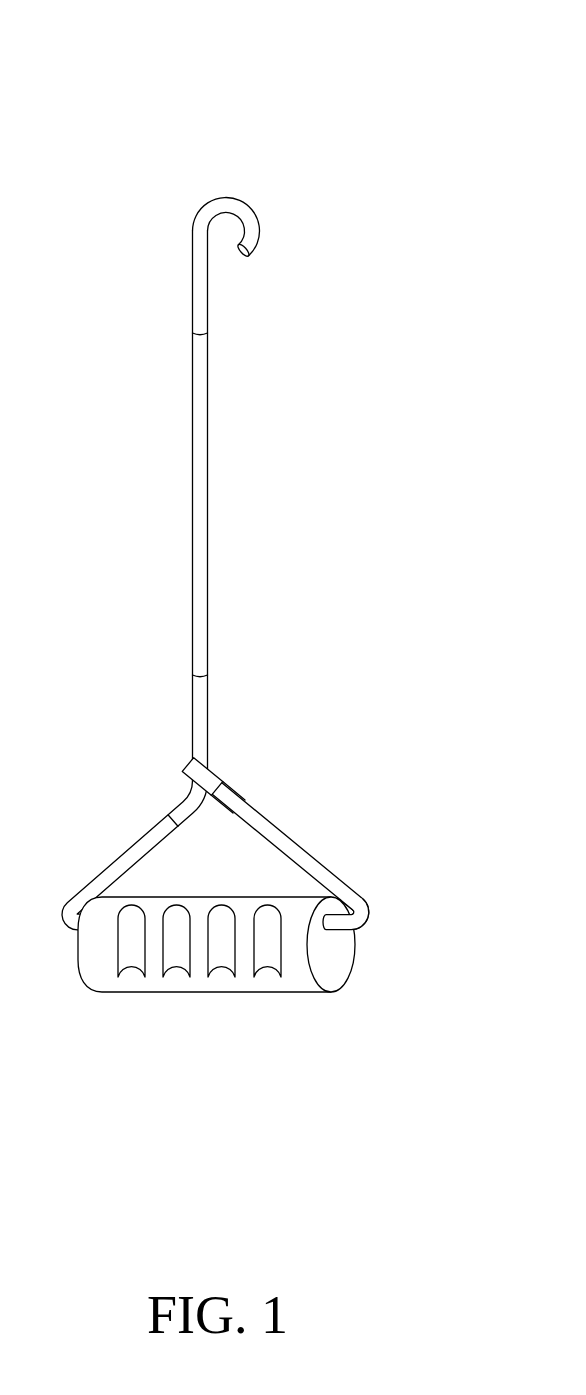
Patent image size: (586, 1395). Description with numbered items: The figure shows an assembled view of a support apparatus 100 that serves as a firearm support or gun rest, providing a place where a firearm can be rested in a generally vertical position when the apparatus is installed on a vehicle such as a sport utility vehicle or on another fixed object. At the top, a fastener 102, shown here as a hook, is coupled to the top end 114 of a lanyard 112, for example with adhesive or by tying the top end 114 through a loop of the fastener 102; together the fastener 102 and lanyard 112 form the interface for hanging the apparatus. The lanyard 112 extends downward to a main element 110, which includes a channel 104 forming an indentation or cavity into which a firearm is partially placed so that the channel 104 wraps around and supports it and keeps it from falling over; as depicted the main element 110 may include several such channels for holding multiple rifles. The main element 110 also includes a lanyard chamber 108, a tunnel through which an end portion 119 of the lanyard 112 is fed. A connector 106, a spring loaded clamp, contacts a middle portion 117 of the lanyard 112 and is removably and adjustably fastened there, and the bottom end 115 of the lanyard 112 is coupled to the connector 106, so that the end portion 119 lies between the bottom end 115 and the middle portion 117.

The support apparatus 100 is at (417, 72).
The fastener 102 is at (222, 197).
The channel 104 is at (143, 902).
The connector 106 is at (213, 768).
The lanyard chamber 108 is at (327, 931).
The main element 110 is at (210, 992).
The lanyard 112 is at (168, 502).
The top end 114 is at (188, 342).
The bottom end 115 is at (227, 787).
The middle portion 117 is at (212, 705).
The end portion 119 is at (330, 862).